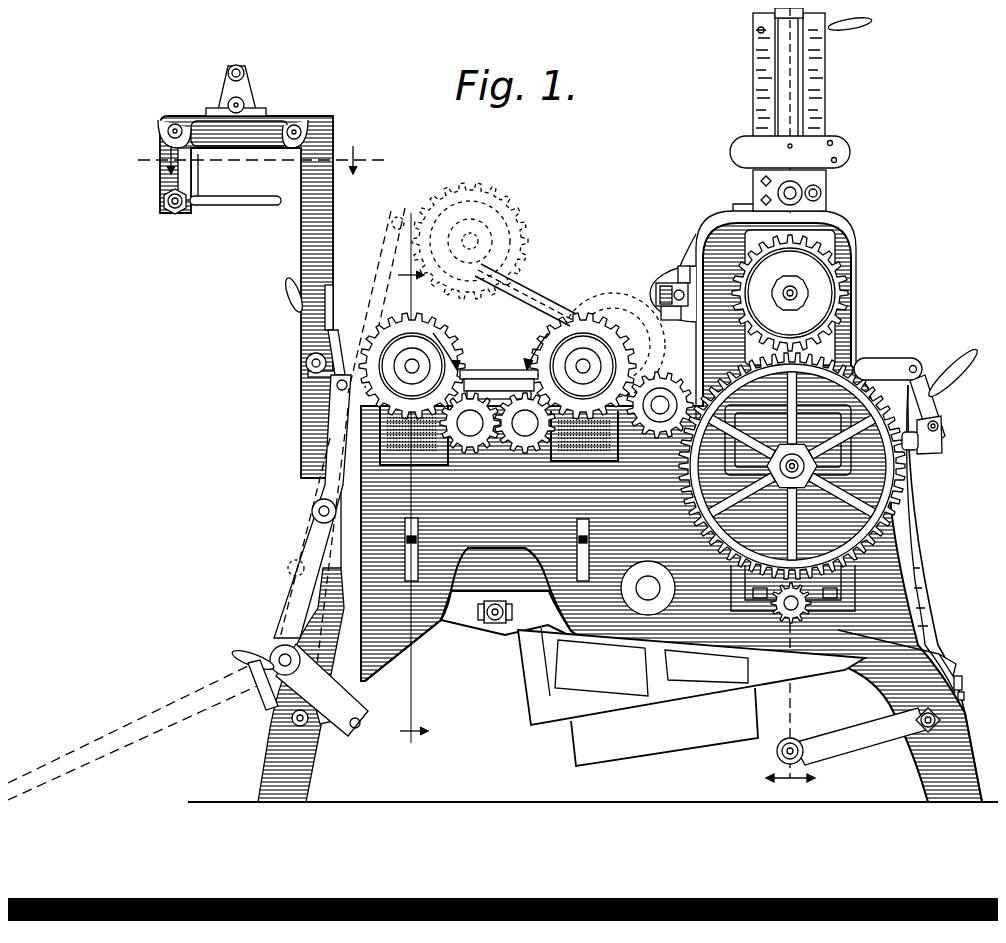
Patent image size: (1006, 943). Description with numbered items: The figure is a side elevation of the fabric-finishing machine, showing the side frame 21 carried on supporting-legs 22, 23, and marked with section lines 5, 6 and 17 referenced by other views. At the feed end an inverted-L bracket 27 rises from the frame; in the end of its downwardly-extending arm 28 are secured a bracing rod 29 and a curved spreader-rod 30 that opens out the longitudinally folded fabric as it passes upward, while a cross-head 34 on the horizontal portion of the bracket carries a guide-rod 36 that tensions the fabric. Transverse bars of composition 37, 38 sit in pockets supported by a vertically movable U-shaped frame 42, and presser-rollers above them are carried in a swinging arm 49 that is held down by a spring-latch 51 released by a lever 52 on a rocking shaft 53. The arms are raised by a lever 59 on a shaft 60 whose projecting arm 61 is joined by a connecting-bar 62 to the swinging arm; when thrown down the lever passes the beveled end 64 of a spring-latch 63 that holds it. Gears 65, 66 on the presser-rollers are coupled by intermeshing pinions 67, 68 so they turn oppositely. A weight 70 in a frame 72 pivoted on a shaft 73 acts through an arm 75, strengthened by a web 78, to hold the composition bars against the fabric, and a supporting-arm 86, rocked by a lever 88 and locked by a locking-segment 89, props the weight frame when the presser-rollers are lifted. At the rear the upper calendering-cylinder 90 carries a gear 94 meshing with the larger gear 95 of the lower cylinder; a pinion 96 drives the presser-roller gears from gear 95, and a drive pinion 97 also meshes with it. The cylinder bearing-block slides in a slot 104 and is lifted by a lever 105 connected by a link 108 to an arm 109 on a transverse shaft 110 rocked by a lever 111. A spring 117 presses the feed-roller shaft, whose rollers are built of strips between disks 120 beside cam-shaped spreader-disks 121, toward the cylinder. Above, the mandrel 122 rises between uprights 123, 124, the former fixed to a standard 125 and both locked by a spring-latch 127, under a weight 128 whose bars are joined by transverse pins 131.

The section line 5 5 is at (413, 491).
The section line 6 6 is at (790, 791).
The section line 17 17 is at (232, 160).
The side frame 21 is at (671, 512).
The supporting-leg 22 is at (298, 766).
The supporting-leg 23 is at (959, 757).
The bracket 27 is at (298, 232).
The downwardly-extending arm 28 is at (184, 163).
The rod 29 is at (163, 207).
The spreader-rod 30 is at (240, 197).
The cross-head 34 is at (238, 82).
The guide-rod 36 is at (236, 62).
The bar of composition 37 is at (398, 452).
The bar of composition 38 is at (575, 455).
The U-shaped frame 42 is at (508, 624).
The swinging arm 49 is at (516, 276).
The spring-latch 51 is at (326, 320).
The lever 52 is at (284, 294).
The shaft 53 is at (300, 358).
The lever 59 is at (297, 528).
The shaft 60 is at (268, 646).
The projecting arm 61 is at (310, 690).
The connecting-bar 62 is at (380, 236).
The spring-latch 63 is at (256, 682).
The beveled end 64 is at (222, 650).
The gear 65 is at (426, 326).
The gear 66 is at (567, 305).
The pinion 67 is at (462, 442).
The pinion 68 is at (514, 446).
The weight 70 is at (685, 730).
The frame 72 is at (621, 700).
The shaft 73 is at (640, 588).
The arm 75 is at (533, 580).
The web 78 is at (780, 602).
The supporting-arm 86 is at (832, 748).
The lever 88 is at (930, 594).
The locking-segment 89 is at (952, 670).
The upper calendering-cylinder 90 is at (856, 272).
The gear 94 is at (822, 286).
The gear 95 is at (852, 362).
The pinion 96 is at (650, 416).
The pinion 97 is at (933, 648).
The slot 104 is at (822, 218).
The lever 105 is at (900, 356).
The link 108 is at (916, 392).
The arm 109 is at (922, 433).
The transverse shaft 110 is at (897, 443).
The lever 111 is at (961, 373).
The spring 117 is at (688, 242).
The disk 120 is at (665, 278).
The spreader-disk 121 is at (818, 183).
The mandrel 122 is at (814, 189).
The upright 123 is at (750, 86).
The upright 124 is at (818, 80).
The standard 125 is at (755, 180).
The spring-latch 127 is at (772, 24).
The weight 128 is at (836, 142).
The transverse pin 131 is at (824, 134).